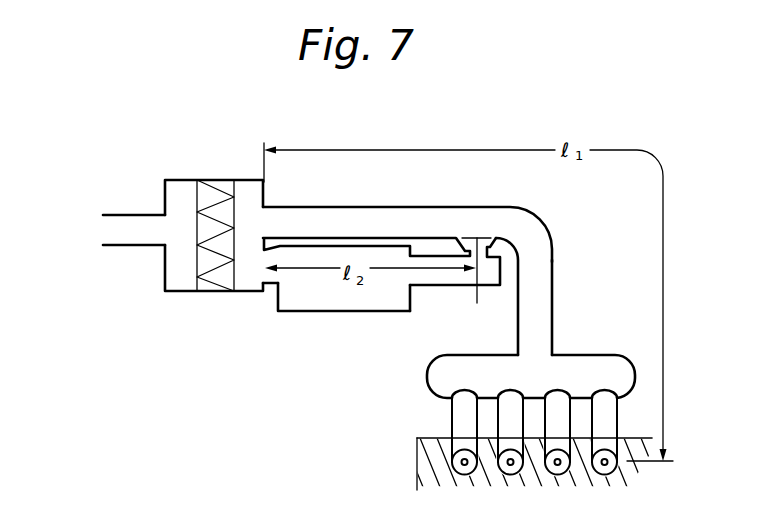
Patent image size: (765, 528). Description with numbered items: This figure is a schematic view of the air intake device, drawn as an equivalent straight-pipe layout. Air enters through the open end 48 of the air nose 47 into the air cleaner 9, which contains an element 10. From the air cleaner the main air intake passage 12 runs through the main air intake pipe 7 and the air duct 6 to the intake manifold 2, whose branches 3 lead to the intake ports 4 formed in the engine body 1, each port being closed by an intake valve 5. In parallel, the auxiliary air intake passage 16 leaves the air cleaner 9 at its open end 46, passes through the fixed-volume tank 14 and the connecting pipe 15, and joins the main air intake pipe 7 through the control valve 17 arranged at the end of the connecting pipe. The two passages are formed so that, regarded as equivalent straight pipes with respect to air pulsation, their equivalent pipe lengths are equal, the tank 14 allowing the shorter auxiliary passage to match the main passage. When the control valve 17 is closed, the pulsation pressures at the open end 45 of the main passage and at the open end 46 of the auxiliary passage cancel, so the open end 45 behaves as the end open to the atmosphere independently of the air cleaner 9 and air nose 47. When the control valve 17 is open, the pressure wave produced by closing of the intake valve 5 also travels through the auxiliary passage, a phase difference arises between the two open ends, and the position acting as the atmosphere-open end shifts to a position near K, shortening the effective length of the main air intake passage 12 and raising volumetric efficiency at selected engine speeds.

The engine body 1 is at (422, 487).
The intake manifold 2 is at (595, 357).
The branches of the intake manifold 3 is at (452, 415).
The intake ports 4 is at (453, 447).
The intake valves 5 is at (450, 462).
The air duct 6 is at (553, 269).
The main air intake pipe 7 is at (410, 207).
The air cleaner 9 is at (246, 180).
The element 10 is at (213, 192).
The main air intake passage 12 is at (358, 238).
The tank 14 is at (340, 313).
The connecting pipe 15 is at (445, 287).
The auxiliary air intake passage 16 is at (422, 286).
The control valve 17 is at (487, 222).
The open end of the main air intake passage 45 is at (269, 227).
The open end of the auxiliary air intake passage 46 is at (270, 285).
The air nose 47 is at (125, 248).
The open end of the air nose 48 is at (103, 227).
The position K is at (451, 222).